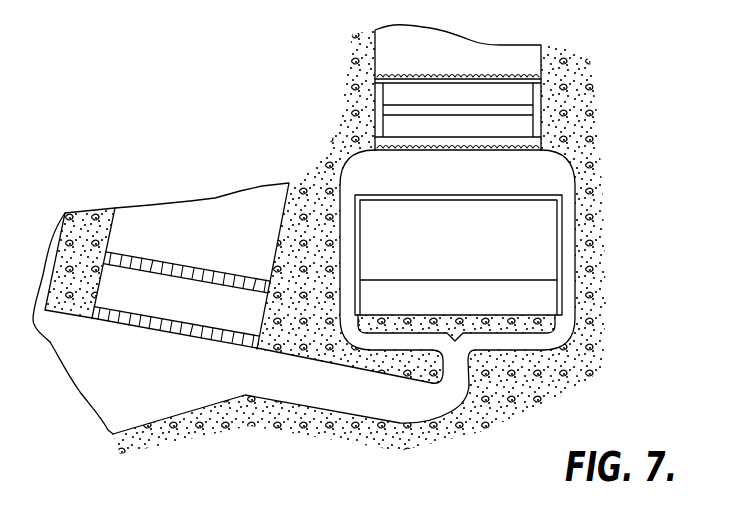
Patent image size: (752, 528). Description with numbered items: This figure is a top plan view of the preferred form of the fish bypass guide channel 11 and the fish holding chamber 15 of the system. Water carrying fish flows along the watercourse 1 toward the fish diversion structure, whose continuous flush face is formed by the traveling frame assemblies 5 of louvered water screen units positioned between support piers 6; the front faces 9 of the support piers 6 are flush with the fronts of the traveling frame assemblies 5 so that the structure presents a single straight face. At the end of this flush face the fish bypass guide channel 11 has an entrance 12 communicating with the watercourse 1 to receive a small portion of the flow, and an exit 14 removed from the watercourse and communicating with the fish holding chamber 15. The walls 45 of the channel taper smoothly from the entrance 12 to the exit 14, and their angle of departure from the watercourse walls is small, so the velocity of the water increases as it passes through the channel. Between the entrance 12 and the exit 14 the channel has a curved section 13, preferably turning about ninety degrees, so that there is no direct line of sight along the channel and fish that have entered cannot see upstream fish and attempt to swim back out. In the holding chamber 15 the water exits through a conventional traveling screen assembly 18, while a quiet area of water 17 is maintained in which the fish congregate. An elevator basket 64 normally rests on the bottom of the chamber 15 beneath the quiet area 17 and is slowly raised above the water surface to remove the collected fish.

The watercourse 1 is at (108, 398).
The traveling frame assembly 5 is at (165, 283).
The support pier 6 is at (95, 204).
The front face of support pier 9 is at (65, 318).
The fish bypass guide channel 11 is at (431, 432).
The entrance 12 is at (263, 385).
The curved section 13 is at (458, 382).
The exit 14 is at (462, 350).
The fish holding chamber 15 is at (596, 144).
The quiet area of water 17 is at (458, 257).
The traveling screen assembly 18 is at (470, 93).
The walls of the guide channel 45 is at (385, 380).
The elevator basket 64 is at (562, 210).